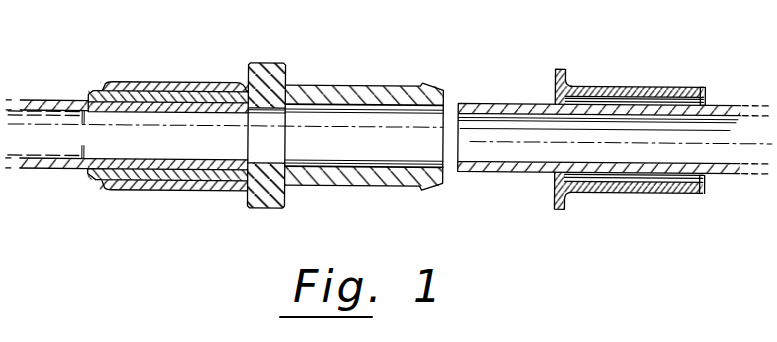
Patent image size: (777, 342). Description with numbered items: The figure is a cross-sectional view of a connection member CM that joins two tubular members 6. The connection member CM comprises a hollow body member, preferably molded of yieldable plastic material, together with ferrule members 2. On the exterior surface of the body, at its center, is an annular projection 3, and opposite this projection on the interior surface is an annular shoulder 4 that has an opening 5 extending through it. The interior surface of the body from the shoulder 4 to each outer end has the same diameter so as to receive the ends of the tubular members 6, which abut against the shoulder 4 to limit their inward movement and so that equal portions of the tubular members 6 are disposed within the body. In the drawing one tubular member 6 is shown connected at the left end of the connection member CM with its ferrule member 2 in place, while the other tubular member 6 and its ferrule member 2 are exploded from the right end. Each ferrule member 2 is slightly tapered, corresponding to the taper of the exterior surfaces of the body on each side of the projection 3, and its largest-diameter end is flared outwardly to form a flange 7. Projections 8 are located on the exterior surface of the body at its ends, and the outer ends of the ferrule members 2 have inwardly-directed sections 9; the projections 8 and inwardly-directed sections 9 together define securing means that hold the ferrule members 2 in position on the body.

The ferrule member 2 is at (147, 191).
The annular projection 3 is at (268, 204).
The annular shoulder 4 is at (280, 166).
The opening 5 is at (276, 143).
The tubular member 6 is at (57, 101).
The flange 7 is at (241, 194).
The projection 8 is at (96, 91).
The inwardly-directed section 9 is at (703, 95).
The connection member CM is at (269, 65).